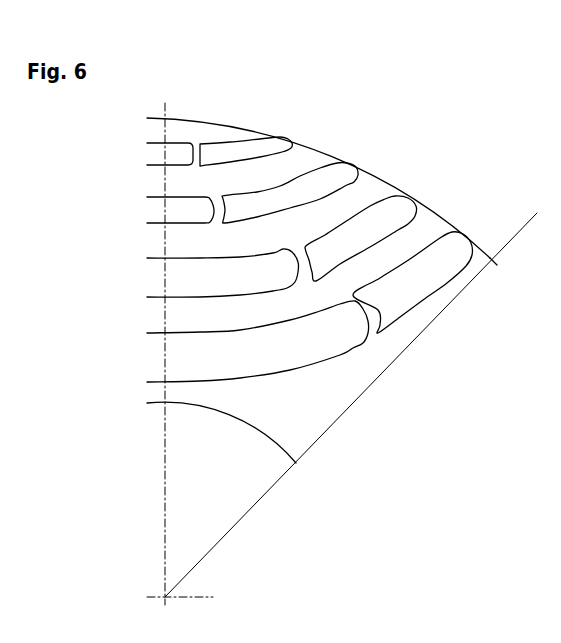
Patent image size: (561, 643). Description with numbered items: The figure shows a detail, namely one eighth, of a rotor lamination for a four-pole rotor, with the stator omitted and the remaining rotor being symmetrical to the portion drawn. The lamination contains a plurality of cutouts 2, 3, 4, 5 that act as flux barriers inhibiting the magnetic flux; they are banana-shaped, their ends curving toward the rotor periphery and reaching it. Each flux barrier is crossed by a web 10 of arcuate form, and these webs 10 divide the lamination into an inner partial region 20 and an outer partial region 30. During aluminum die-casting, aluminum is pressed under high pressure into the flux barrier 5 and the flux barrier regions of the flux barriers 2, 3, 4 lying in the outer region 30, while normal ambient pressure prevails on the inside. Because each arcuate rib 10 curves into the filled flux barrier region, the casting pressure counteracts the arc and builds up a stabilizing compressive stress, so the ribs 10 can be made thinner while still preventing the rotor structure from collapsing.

The cutout (flux barrier) 2 is at (238, 372).
The cutout (flux barrier) 3 is at (230, 288).
The cutout (flux barrier) 4 is at (251, 192).
The cutout (flux barrier) 5 is at (228, 143).
The web (arcuate rib) 10 is at (232, 231).
The inner partial region 20 is at (288, 427).
The outer partial region 30 is at (433, 215).